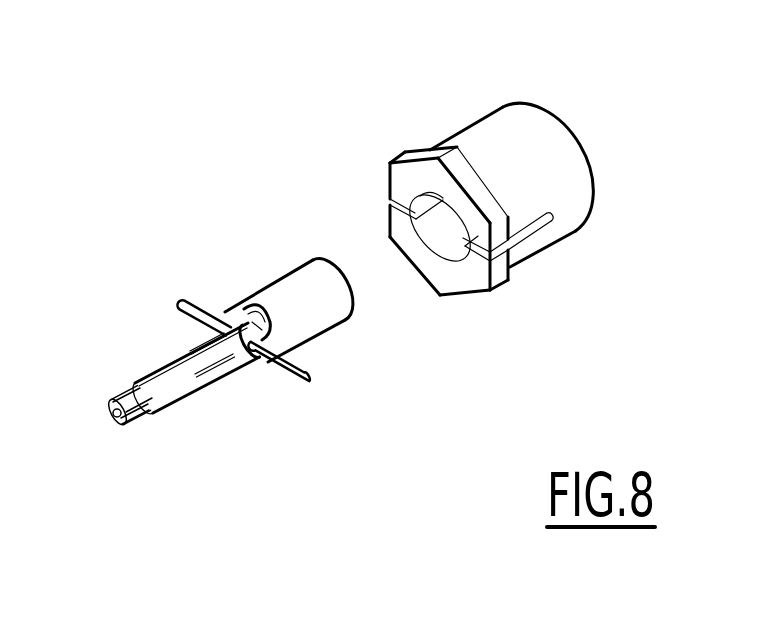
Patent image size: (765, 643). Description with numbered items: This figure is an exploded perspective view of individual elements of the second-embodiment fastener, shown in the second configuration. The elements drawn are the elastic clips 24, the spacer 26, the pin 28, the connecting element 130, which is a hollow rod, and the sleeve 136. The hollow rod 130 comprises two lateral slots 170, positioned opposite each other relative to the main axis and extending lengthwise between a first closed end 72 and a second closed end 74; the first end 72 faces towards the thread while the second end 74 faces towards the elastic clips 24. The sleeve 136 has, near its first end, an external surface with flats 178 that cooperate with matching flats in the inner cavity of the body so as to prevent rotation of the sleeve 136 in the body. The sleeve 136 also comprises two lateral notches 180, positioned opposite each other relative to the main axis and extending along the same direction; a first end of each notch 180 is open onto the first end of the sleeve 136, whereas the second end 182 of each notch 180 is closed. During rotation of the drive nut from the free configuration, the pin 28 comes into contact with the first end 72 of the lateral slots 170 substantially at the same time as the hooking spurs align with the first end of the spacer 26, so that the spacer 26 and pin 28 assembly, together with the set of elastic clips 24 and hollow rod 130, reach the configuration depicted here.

The elastic clips 24 is at (190, 395).
The spacer 26 is at (117, 413).
The pin 28 is at (277, 378).
The first closed end 72 is at (244, 308).
The second closed end 74 is at (263, 306).
The connecting element 130 is at (332, 305).
The sleeve 136 is at (507, 128).
The lateral slots 170 is at (256, 325).
The flats 178 is at (468, 297).
The lateral notches 180 is at (527, 244).
The second end 182 is at (556, 227).